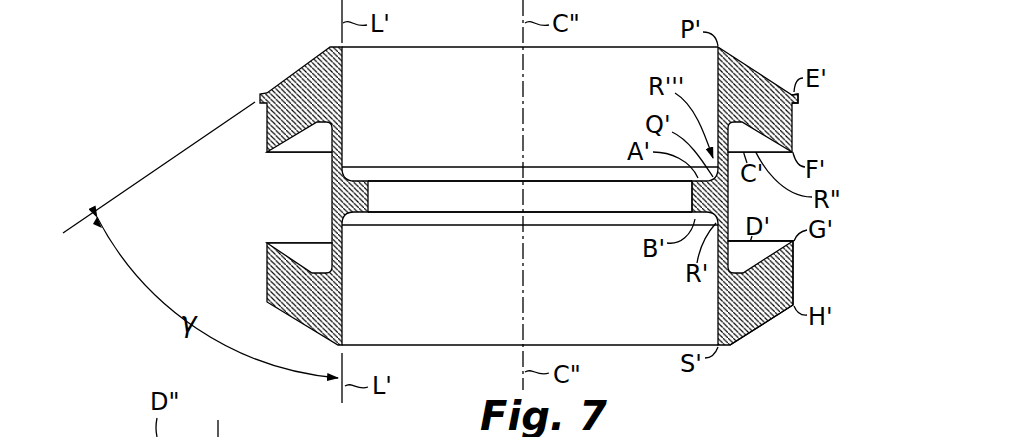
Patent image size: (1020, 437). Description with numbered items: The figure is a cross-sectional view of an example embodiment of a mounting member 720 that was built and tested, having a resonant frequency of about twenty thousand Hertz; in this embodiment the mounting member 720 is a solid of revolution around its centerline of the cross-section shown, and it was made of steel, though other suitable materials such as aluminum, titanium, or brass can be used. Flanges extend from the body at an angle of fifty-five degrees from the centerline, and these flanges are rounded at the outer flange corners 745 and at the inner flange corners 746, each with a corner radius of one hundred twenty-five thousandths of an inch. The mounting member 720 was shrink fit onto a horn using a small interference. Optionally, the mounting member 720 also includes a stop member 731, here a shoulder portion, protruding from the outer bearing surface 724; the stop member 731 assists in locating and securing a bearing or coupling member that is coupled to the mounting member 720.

The mounting member 720 is at (756, 318).
The outer bearing surface 724 is at (795, 277).
The stop member 731 is at (799, 100).
The outer flange corners 745 is at (752, 122).
The inner flange corners 746 is at (692, 195).